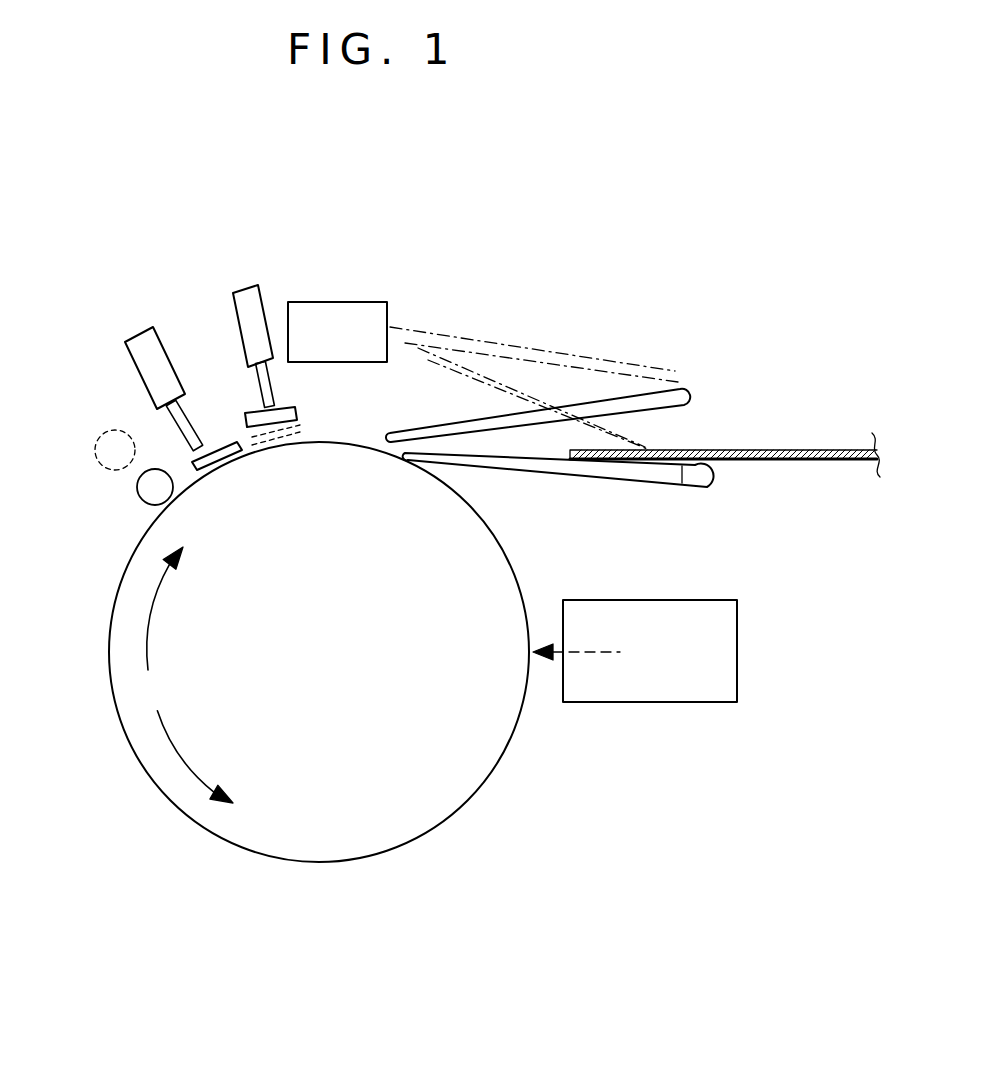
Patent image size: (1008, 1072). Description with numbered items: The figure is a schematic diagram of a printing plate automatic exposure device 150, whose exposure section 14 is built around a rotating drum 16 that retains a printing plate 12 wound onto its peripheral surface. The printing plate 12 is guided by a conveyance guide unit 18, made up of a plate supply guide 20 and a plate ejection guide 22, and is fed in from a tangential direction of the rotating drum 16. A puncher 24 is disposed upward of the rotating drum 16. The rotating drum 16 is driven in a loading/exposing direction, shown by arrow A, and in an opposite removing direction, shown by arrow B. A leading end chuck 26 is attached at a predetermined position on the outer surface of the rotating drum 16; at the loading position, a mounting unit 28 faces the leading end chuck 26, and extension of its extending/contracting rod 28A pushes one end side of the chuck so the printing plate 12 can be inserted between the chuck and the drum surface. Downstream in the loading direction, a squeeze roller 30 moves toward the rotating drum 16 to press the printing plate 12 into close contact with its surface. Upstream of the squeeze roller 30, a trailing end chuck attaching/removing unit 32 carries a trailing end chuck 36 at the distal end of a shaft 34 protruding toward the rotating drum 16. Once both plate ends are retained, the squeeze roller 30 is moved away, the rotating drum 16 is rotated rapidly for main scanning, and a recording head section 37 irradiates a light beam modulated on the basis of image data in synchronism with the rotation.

The printing plate automatic exposure device 150 is at (652, 262).
The printing plate 12 is at (777, 450).
The exposure section 14 is at (570, 810).
The rotating drum 16 is at (360, 857).
The conveyance guide unit 18 is at (551, 491).
The plate supply guide 20 is at (493, 463).
The plate ejection guide 22 is at (523, 420).
The puncher 24 is at (335, 301).
The leading end chuck 26 is at (207, 445).
The mounting unit 28 is at (145, 330).
The extending/contracting rod 28A is at (173, 428).
The squeeze roller 30 is at (133, 493).
The trailing end chuck attaching/removing unit 32 is at (266, 292).
The shaft 34 is at (258, 385).
The trailing end chuck 36 is at (298, 410).
The recording head section 37 is at (657, 707).
The loading/exposing direction arrow A is at (173, 753).
The removing direction arrow B is at (150, 628).